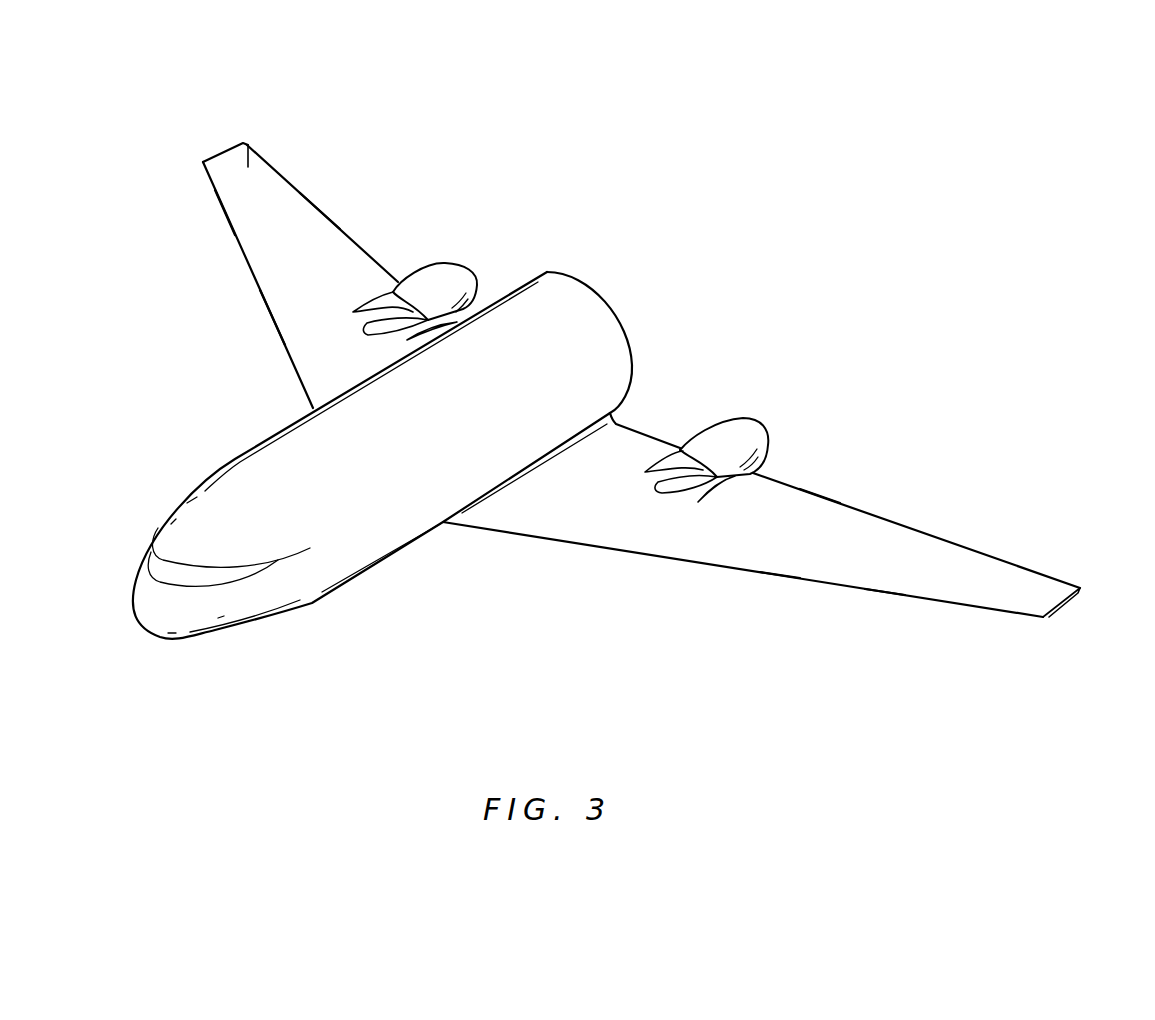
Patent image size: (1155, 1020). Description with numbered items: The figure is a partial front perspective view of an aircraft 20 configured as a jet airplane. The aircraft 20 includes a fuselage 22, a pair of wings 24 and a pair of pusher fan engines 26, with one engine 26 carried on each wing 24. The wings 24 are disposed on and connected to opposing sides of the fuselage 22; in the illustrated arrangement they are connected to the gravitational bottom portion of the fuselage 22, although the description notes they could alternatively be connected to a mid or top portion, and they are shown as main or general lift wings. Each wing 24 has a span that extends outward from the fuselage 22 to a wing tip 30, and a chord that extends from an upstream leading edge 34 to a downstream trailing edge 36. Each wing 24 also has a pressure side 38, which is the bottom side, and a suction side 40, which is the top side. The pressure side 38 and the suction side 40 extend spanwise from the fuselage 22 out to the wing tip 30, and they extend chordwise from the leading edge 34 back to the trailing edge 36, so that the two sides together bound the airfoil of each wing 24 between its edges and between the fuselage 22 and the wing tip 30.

The aircraft 20 is at (643, 392).
The fuselage 22 is at (307, 614).
The wing 24 is at (283, 167).
The pusher fan engine 26 is at (444, 261).
The wing tip 30 is at (218, 152).
The leading edge 34 is at (272, 317).
The trailing edge 36 is at (336, 222).
The pressure side 38 is at (225, 214).
The suction side 40 is at (247, 144).